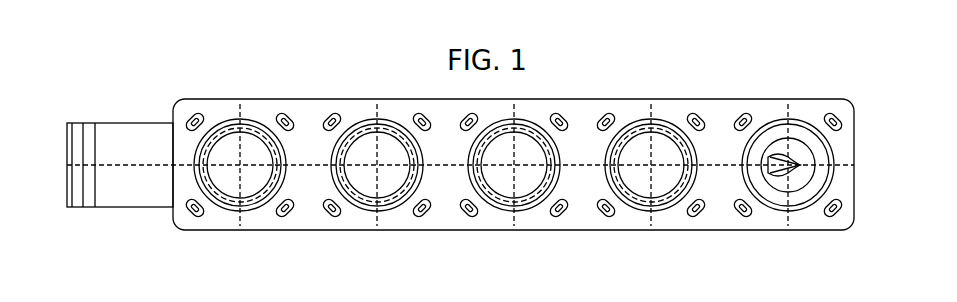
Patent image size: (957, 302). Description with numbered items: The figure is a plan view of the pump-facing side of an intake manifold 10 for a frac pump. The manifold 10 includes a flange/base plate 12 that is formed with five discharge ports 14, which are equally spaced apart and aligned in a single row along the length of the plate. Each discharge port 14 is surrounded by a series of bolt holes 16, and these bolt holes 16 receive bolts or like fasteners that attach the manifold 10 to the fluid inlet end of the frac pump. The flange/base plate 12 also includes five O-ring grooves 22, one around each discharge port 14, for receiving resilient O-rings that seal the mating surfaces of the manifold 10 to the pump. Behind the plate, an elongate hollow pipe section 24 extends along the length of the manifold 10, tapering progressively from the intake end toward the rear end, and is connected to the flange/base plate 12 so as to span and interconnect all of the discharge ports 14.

The manifold 10 is at (460, 145).
The flange/base plate 12 is at (307, 105).
The discharge ports 14 is at (365, 183).
The bolt holes 16 is at (697, 117).
The O-ring grooves 22 is at (660, 210).
The elongate hollow pipe section 24 is at (129, 192).